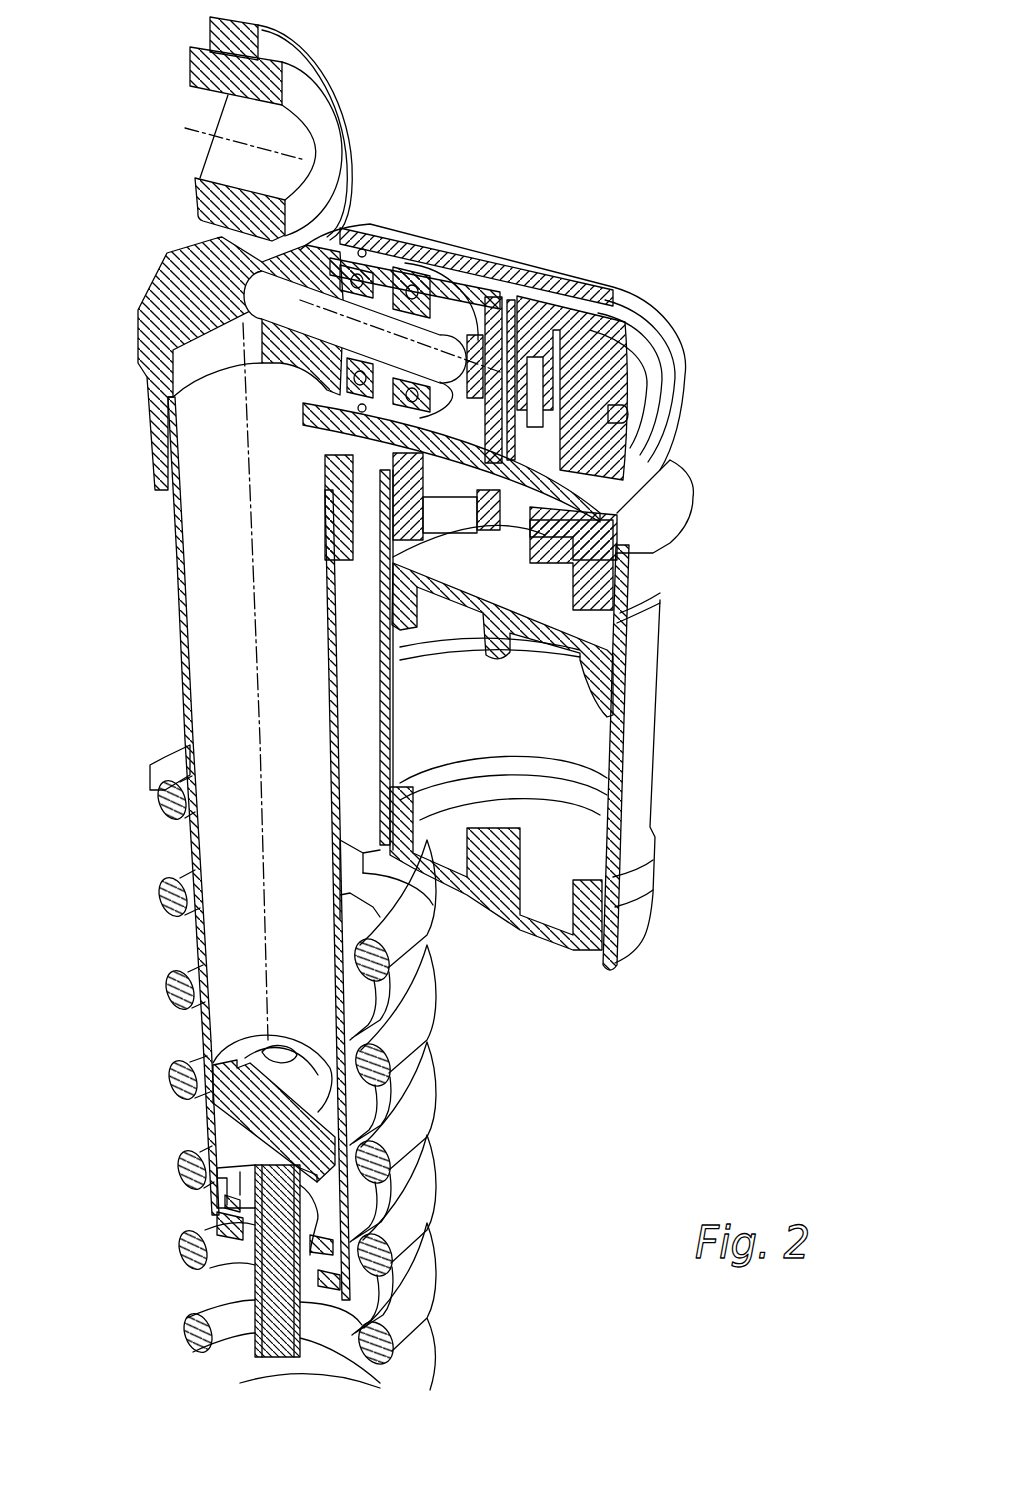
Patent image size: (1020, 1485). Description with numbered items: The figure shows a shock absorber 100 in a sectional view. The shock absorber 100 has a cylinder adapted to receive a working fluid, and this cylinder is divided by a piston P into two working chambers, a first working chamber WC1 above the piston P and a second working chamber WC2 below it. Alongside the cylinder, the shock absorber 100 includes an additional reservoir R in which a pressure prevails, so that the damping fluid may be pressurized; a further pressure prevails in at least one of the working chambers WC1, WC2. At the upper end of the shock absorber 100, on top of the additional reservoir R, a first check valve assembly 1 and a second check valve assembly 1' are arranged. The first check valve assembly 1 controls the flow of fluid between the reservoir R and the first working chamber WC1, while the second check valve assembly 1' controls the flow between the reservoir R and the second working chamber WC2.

The shock absorber 100 is at (389, 703).
The first check valve assembly 1 is at (458, 288).
The second check valve assembly 1' is at (385, 330).
The first working chamber WC1 is at (218, 620).
The second working chamber WC2 is at (235, 1195).
The piston P is at (213, 1105).
The additional reservoir R is at (547, 733).